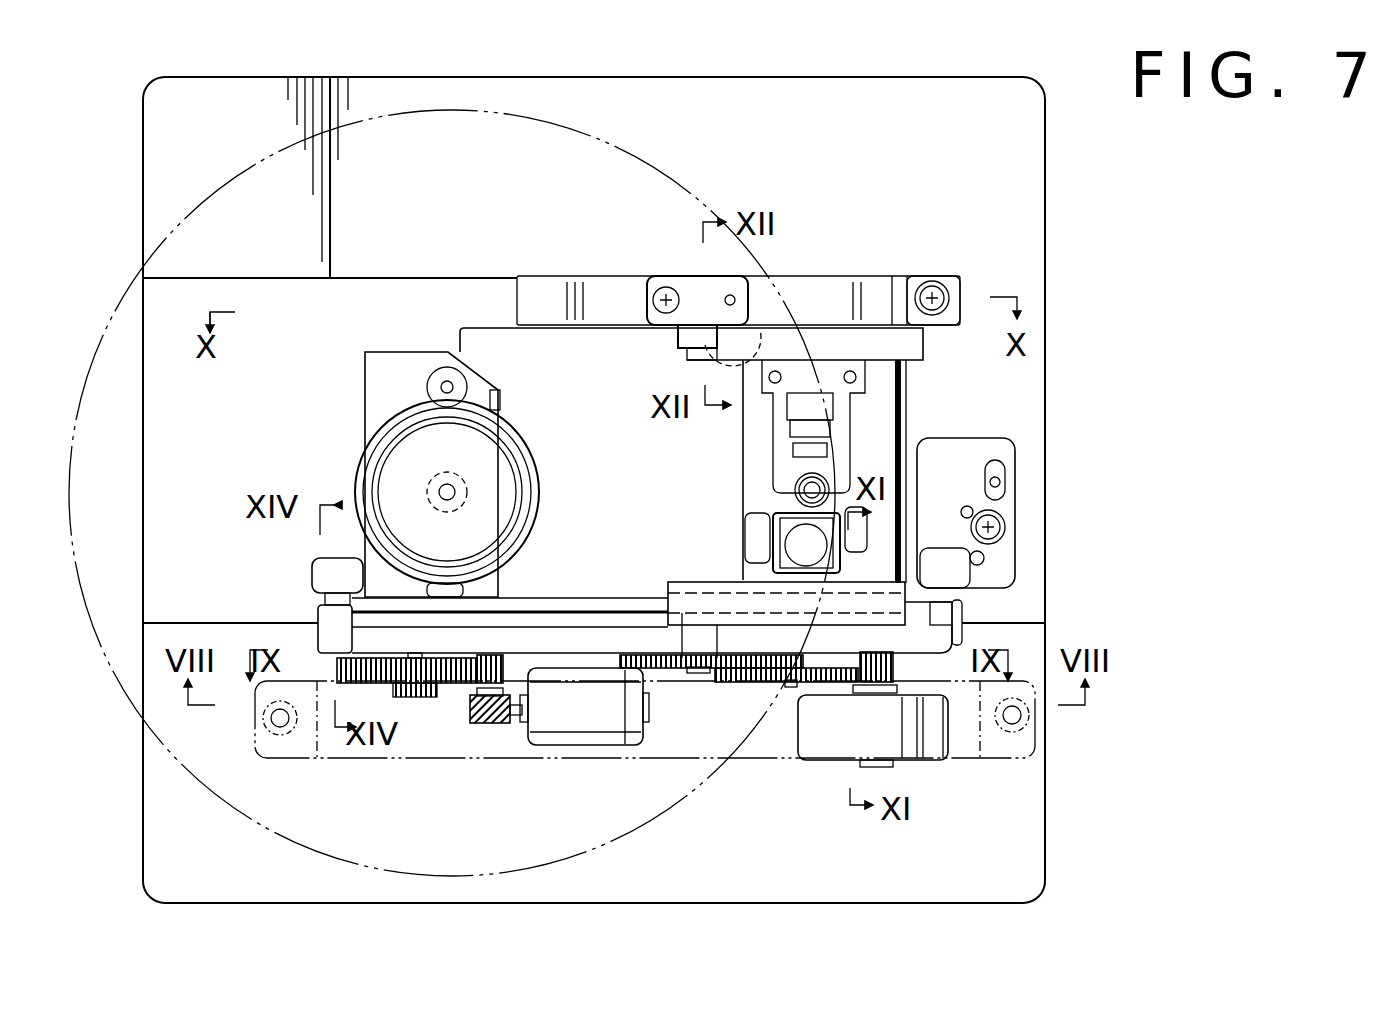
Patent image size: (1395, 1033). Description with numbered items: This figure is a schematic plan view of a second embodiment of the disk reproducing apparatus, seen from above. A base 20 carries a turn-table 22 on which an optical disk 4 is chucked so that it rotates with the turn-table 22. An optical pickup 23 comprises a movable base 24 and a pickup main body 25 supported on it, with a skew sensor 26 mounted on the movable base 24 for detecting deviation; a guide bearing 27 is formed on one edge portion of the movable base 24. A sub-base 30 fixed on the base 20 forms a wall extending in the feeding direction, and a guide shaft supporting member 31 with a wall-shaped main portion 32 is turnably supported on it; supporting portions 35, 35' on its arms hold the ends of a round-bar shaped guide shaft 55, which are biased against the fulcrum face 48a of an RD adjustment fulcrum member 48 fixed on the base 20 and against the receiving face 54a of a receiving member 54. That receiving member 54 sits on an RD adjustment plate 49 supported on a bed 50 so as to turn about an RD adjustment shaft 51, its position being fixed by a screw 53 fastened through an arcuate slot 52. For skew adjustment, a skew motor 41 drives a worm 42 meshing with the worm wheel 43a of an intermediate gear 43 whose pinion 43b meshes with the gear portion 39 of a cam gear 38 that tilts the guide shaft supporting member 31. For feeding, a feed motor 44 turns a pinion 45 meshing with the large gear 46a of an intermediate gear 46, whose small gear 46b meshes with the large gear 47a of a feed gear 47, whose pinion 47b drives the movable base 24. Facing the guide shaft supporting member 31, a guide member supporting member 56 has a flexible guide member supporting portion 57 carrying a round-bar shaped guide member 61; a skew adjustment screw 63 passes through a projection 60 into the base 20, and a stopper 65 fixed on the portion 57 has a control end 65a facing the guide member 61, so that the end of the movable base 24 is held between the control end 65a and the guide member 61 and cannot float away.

The base 20 is at (160, 126).
The optical disk 4 is at (122, 300).
The guide member supporting member 56 is at (540, 290).
The guide member supporting portion 57 is at (838, 290).
The projection 60 is at (958, 282).
The skew adjustment screw 63 is at (932, 282).
The stopper 65 is at (680, 290).
The guide member 61 is at (755, 330).
The control end 65a is at (690, 336).
The movable base 24 is at (752, 446).
The optical pickup 23 is at (752, 486).
The pickup main body 25 is at (840, 455).
The skew sensor 26 is at (770, 540).
The guide bearing 27 is at (697, 590).
The guide shaft supporting member 31 is at (588, 630).
The supporting portion 35 is at (300, 616).
The RD adjustment fulcrum member 48 is at (314, 562).
The fulcrum face 48a is at (325, 605).
The supporting portion 35' is at (1025, 585).
The receiving face 54a is at (968, 622).
The receiving member 54 is at (992, 582).
The bed 50 is at (980, 445).
The RD adjustment plate 49 is at (1002, 455).
The screw 53 is at (1003, 505).
The slot 52 is at (965, 510).
The RD adjustment shaft 51 is at (1010, 540).
The turn-table 22 is at (370, 460).
The guide shaft 55 is at (390, 600).
The pinion 43b is at (520, 640).
The cam gear 38 is at (340, 690).
The gear portion 39 is at (415, 700).
The main portion 32 is at (455, 700).
The worm 42 is at (478, 725).
The intermediate gear 43 is at (492, 728).
The worm wheel 43a is at (516, 718).
The skew motor 41 is at (600, 720).
The large gear 47a is at (690, 675).
The intermediate gear 46 is at (762, 690).
The pinion 47b is at (865, 690).
The feed gear 47 is at (680, 690).
The sub-base 30 is at (725, 700).
The feed motor 44 is at (935, 765).
The large gear 46a is at (838, 690).
The small gear 46b is at (810, 762).
The pinion 45 is at (925, 690).